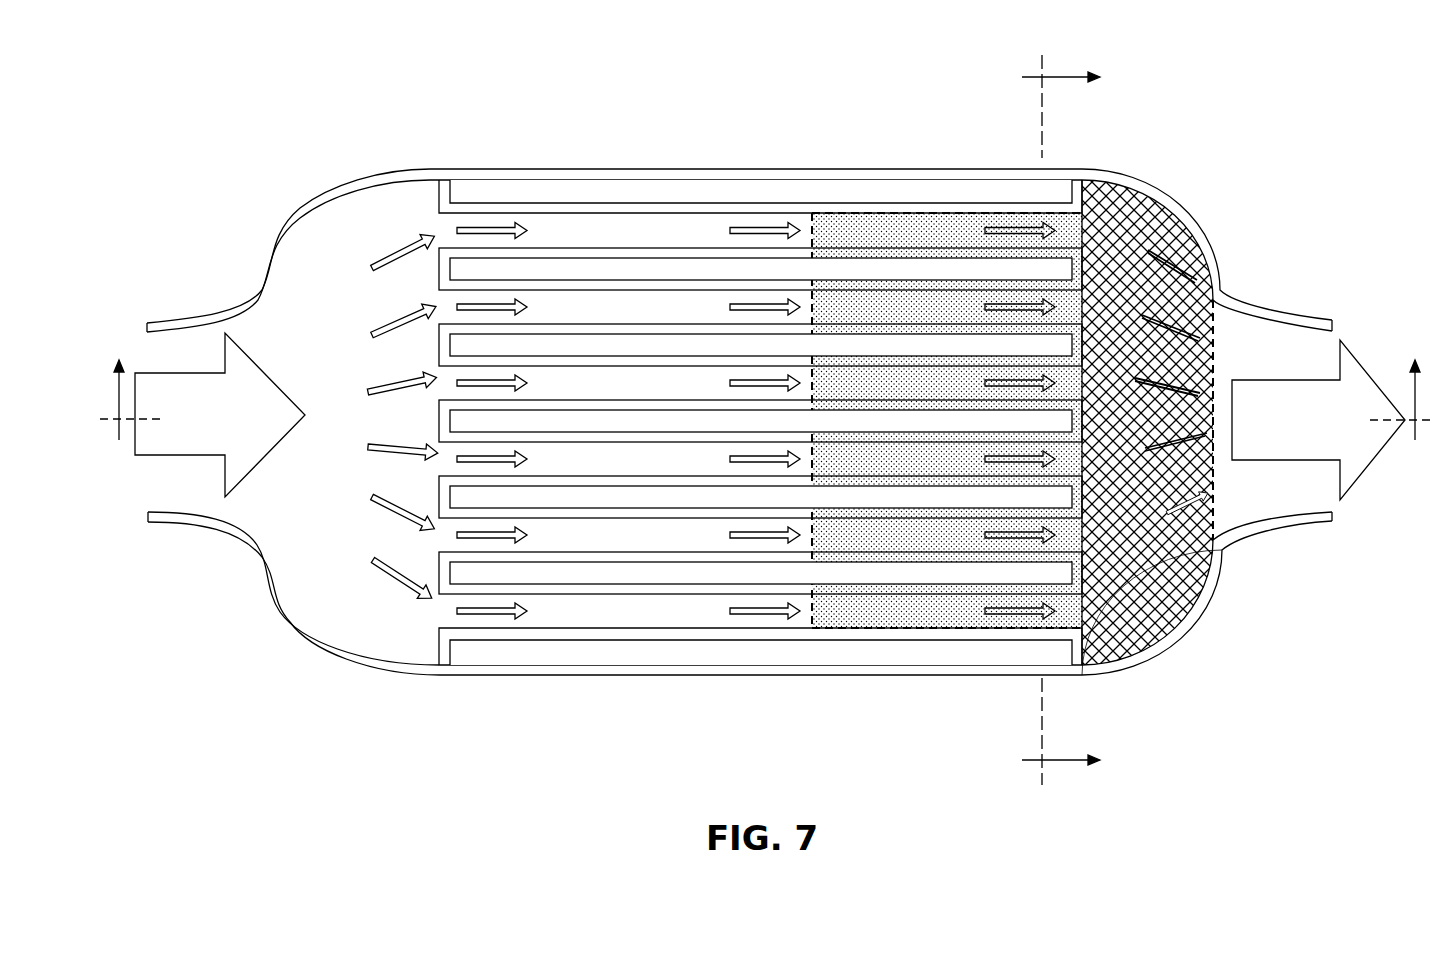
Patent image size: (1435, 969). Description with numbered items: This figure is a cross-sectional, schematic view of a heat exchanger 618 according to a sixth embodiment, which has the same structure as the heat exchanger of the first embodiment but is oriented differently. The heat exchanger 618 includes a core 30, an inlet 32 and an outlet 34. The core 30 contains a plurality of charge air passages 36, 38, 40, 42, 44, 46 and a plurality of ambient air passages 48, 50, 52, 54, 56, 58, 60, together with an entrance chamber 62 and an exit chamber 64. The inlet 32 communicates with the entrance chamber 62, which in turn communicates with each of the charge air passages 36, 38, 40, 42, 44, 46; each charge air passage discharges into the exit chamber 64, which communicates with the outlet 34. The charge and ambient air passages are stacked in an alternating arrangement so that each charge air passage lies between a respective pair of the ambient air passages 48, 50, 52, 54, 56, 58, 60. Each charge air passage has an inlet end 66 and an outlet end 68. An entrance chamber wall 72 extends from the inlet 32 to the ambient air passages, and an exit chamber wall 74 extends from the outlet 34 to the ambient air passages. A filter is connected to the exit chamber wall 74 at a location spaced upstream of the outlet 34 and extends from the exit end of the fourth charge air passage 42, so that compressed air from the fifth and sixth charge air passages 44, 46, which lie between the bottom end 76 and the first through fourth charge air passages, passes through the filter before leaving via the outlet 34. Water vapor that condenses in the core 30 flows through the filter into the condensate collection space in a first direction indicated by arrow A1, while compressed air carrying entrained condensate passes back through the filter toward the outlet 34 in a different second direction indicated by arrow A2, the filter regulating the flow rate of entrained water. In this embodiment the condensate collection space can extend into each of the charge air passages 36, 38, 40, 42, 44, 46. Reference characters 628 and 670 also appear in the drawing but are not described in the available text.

The core 30 is at (523, 680).
The inlet 32 is at (145, 318).
The outlet 34 is at (1337, 317).
The first charge air passage 36 is at (538, 232).
The second charge air passage 38 is at (587, 303).
The third charge air passage 40 is at (650, 380).
The fourth charge air passage 42 is at (578, 455).
The fifth charge air passage 44 is at (618, 540).
The sixth charge air passage 46 is at (693, 610).
The ambient air passage 48 is at (762, 190).
The ambient air passage 50 is at (850, 270).
The ambient air passage 52 is at (905, 345).
The ambient air passage 54 is at (950, 420).
The ambient air passage 56 is at (883, 500).
The ambient air passage 58 is at (940, 575).
The ambient air passage 60 is at (1000, 655).
The entrance chamber 62 is at (338, 262).
The exit chamber 64 is at (1200, 232).
The inlet end 66 is at (443, 225).
The outlet end 68 is at (1100, 192).
The entrance chamber wall 72 is at (278, 220).
The exit chamber wall 74 is at (1203, 622).
The bottom end 76 is at (787, 675).
The heat exchanger 618 is at (800, 133).
The outlet cone 628 is at (1217, 514).
The porous mesh element 670 is at (1160, 643).
The arrow indicating first direction A1 is at (1150, 215).
The arrow indicating second direction A2 is at (1213, 488).